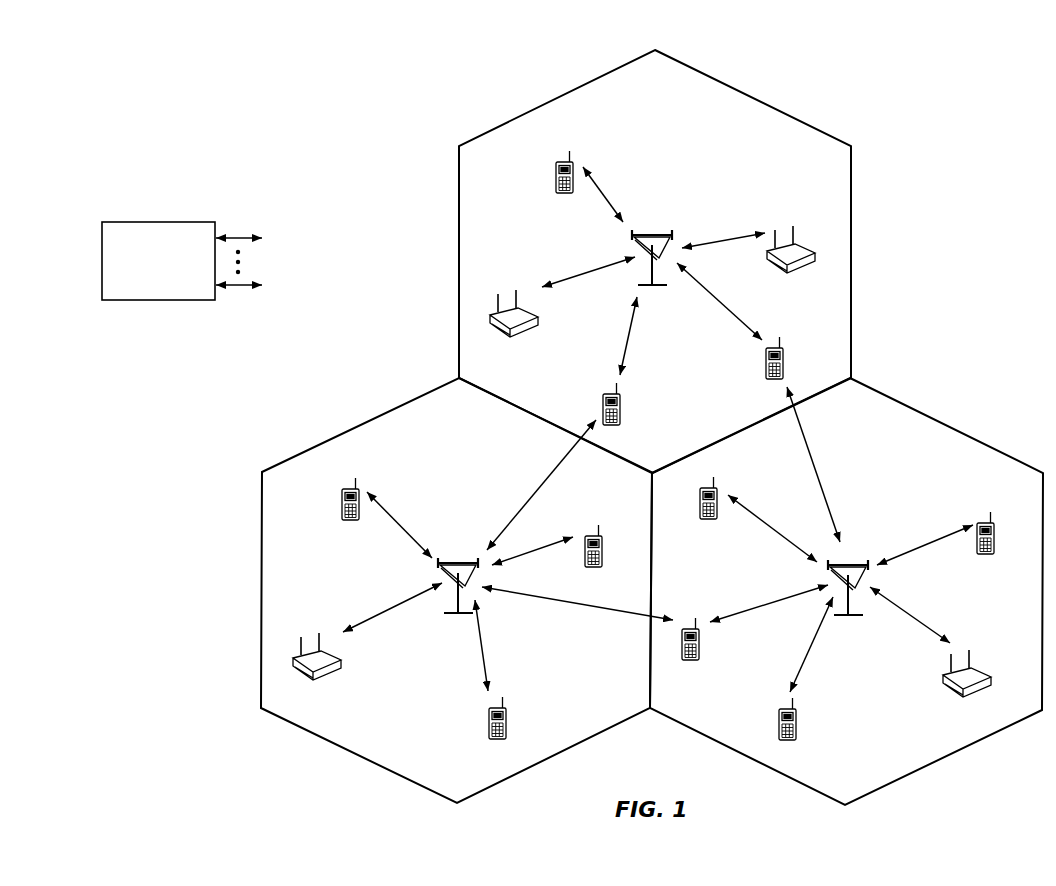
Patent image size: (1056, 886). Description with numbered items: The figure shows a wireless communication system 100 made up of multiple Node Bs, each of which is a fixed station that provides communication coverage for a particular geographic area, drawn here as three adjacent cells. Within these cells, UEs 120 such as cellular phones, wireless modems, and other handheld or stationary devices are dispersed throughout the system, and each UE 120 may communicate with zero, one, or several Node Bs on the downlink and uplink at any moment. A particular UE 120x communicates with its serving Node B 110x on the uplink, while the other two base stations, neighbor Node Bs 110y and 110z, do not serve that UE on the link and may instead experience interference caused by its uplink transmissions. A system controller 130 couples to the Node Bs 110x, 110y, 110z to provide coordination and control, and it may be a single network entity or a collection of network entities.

The wireless communication system 100 is at (987, 111).
The serving Node B 110x is at (645, 233).
The neighbor Node B 110y is at (451, 563).
The neighbor Node B 110z is at (848, 565).
The UE 120 is at (555, 170).
The UE 120x is at (601, 403).
The system controller 130 is at (151, 222).